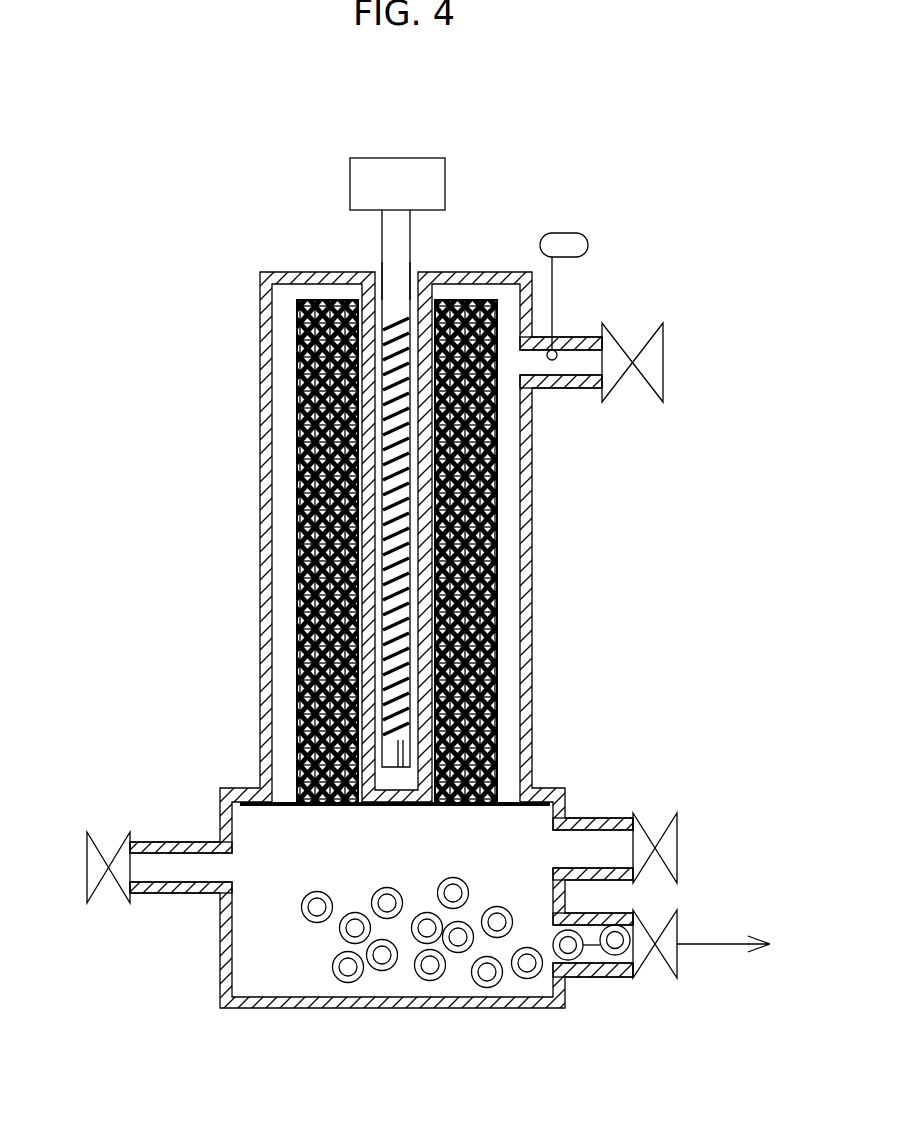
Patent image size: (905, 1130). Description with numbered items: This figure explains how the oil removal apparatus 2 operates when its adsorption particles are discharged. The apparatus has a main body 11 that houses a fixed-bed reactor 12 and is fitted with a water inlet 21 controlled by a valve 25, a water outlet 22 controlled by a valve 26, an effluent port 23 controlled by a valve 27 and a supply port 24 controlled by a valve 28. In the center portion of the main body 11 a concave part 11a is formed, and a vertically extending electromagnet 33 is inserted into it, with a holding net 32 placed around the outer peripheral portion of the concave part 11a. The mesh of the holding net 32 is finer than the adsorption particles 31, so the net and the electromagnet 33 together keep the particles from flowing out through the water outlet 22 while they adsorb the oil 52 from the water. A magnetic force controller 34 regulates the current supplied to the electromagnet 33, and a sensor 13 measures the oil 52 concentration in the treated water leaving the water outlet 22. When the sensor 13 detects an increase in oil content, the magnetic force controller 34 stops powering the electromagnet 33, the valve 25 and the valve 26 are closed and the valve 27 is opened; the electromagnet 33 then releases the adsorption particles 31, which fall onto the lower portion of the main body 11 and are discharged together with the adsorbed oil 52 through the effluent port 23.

The oil removal apparatus 2 is at (723, 240).
The main body 11 is at (532, 715).
The concave part 11a is at (380, 293).
The fixed-bed reactor 12 is at (364, 509).
The sensor 13 is at (588, 244).
The water inlet 21 is at (175, 893).
The water outlet 22 is at (555, 388).
The effluent port 23 is at (578, 977).
The supply port 24 is at (605, 818).
The valve 25 is at (87, 893).
The valve 26 is at (663, 392).
The valve 27 is at (677, 968).
The valve 28 is at (677, 828).
The adsorption particles 31 is at (511, 984).
The holding net 32 is at (307, 300).
The electromagnet 33 is at (402, 325).
The magnetic force controller 34 is at (447, 192).
The oil 52 is at (315, 923).